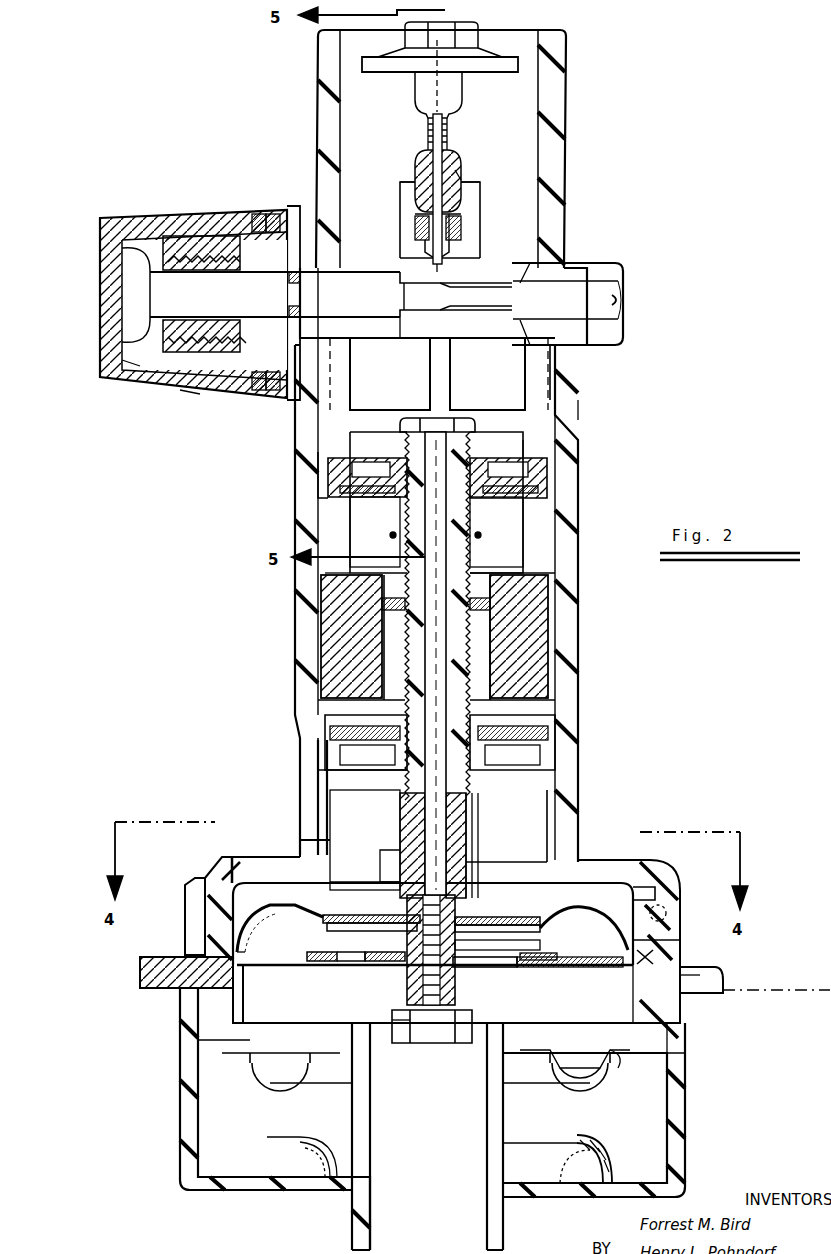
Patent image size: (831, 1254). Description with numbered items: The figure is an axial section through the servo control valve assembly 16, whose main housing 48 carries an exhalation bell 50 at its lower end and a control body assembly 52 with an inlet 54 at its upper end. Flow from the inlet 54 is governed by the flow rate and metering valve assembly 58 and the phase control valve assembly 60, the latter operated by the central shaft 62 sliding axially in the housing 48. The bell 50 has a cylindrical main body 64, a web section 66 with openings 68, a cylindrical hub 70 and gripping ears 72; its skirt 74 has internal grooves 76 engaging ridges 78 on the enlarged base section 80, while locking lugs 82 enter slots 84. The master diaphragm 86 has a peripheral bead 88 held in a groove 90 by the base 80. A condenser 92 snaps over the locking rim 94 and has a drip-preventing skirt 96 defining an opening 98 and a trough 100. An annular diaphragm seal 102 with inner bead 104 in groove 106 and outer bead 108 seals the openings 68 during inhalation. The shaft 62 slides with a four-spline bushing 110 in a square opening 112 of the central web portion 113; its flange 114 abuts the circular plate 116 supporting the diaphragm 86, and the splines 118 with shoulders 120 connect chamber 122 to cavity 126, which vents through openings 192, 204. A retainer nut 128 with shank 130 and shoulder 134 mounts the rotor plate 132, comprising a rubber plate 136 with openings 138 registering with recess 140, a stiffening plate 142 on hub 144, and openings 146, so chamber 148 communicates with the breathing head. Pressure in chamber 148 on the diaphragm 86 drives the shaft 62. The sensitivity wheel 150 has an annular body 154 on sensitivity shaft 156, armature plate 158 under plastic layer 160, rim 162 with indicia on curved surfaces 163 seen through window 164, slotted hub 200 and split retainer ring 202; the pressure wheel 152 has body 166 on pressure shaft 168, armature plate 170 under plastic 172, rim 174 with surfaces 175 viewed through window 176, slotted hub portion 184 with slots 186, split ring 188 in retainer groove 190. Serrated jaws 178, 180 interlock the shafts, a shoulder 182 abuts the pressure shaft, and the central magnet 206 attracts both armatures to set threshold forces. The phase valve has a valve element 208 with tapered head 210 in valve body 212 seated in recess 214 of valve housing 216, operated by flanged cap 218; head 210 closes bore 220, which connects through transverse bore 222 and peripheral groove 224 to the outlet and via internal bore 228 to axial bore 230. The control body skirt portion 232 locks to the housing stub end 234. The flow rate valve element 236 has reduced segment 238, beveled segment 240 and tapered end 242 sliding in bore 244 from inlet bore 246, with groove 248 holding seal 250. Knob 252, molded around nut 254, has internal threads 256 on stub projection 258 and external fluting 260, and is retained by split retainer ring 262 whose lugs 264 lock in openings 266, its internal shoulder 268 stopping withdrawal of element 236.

The servo control valve assembly 16 is at (712, 425).
The main housing 48 is at (582, 650).
The exhalation bell 50 is at (690, 970).
The control body assembly 52 is at (568, 175).
The inlet 54 is at (622, 310).
The flow rate and metering valve assembly 58 is at (185, 215).
The phase control valve assembly 60 is at (472, 150).
The central shaft 62 is at (458, 380).
The main body 64 is at (633, 1000).
The web section 66 is at (322, 1023).
The openings 68 is at (555, 1023).
The cylindrical hub 70 is at (487, 1122).
The ears 72 is at (148, 962).
The skirt 74 is at (186, 888).
The internal grooves 76 is at (668, 913).
The ridges 78 is at (246, 878).
The base section 80 is at (272, 855).
The locking lugs 82 is at (682, 937).
The slots 84 is at (672, 882).
The master diaphragm 86 is at (585, 870).
The peripheral bead 88 is at (185, 960).
The groove 90 is at (655, 955).
The condenser 92 is at (688, 1088).
The locking rim 94 is at (686, 1015).
The drip-preventing skirt 96 is at (605, 1150).
The opening 98 is at (560, 1185).
The trough 100 is at (235, 1175).
The diaphragm seal 102 is at (552, 1148).
The inner bead 104 is at (560, 1070).
The groove 106 is at (520, 1060).
The outer bead 108 is at (625, 1068).
The four-spline bushing 110 is at (468, 815).
The square opening 112 is at (390, 870).
The central web portion 113 is at (498, 870).
The flange 114 is at (512, 902).
The circular plate 116 is at (350, 912).
The splines 118 is at (400, 810).
The shoulder 120 is at (380, 876).
The chamber 122 is at (290, 900).
The cavity 126 is at (385, 800).
The retainer nut 128 is at (425, 1045).
The shank 130 is at (407, 985).
The rotor plate 132 is at (490, 975).
The shoulder 134 is at (392, 1012).
The rubber plate 136 is at (280, 970).
The openings 138 is at (360, 970).
The circular recess 140 is at (378, 1040).
The stiffening plate 142 is at (320, 940).
The hub 144 is at (500, 938).
The openings 146 is at (548, 940).
The chamber 148 is at (370, 948).
The sensitivity wheel 150 is at (322, 740).
The peak inspiratory pressure wheel 152 is at (560, 478).
The annular body 154 is at (560, 740).
The sensitivity shaft 156 is at (560, 720).
The armature plate 158 is at (318, 752).
The molded plastic layer 160 is at (320, 705).
The outer rim 162 is at (550, 755).
The curved surfaces 163 is at (330, 760).
The window 164 is at (325, 770).
The annular body 166 is at (540, 470).
The pressure shaft 168 is at (496, 532).
The armature plate 170 is at (548, 505).
The protective layer of plastic 172 is at (375, 532).
The rim 174 is at (545, 490).
The spaced surfaces 175 is at (320, 470).
The window 176 is at (322, 495).
The serrated jaw portion 178 is at (320, 655).
The serrated jaw portion 180 is at (320, 585).
The shoulder 182 is at (478, 422).
The slotted hub portion 184 is at (380, 528).
The slots 186 is at (560, 565).
The split ring 188 is at (391, 538).
The retainer groove 190 is at (481, 538).
The openings 192 is at (545, 530).
The slotted hub 200 is at (552, 625).
The split retainer ring 202 is at (330, 680).
The openings 204 is at (520, 810).
The central magnet 206 is at (320, 620).
The valve element 208 is at (432, 138).
The tapered valve head 210 is at (448, 258).
The valve body 212 is at (422, 162).
The recess 214 is at (462, 182).
The valve housing 216 is at (474, 205).
The flanged cap 218 is at (366, 62).
The bore 220 is at (452, 230).
The transverse bore 222 is at (420, 222).
The peripheral groove 224 is at (462, 225).
The internal bore 228 is at (408, 280).
The axial bore 230 is at (430, 300).
The skirt portion 232 is at (562, 382).
The stub end 234 is at (585, 400).
The valve element 236 is at (380, 374).
The reduced diameter segment 238 is at (410, 316).
The beveled segment 240 is at (470, 268).
The tapered end segment 242 is at (490, 330).
The bore 244 is at (520, 300).
The inlet bore 246 is at (620, 290).
The groove 248 is at (290, 280).
The seal element 250 is at (290, 310).
The knob 252 is at (168, 378).
The nut 254 is at (140, 300).
The internal threads 256 is at (200, 236).
The stub projection 258 is at (228, 240).
The external fluting 260 is at (210, 392).
The split retainer ring 262 is at (290, 208).
The lugs 264 is at (272, 214).
The openings 266 is at (258, 214).
The internal shoulder 268 is at (325, 275).